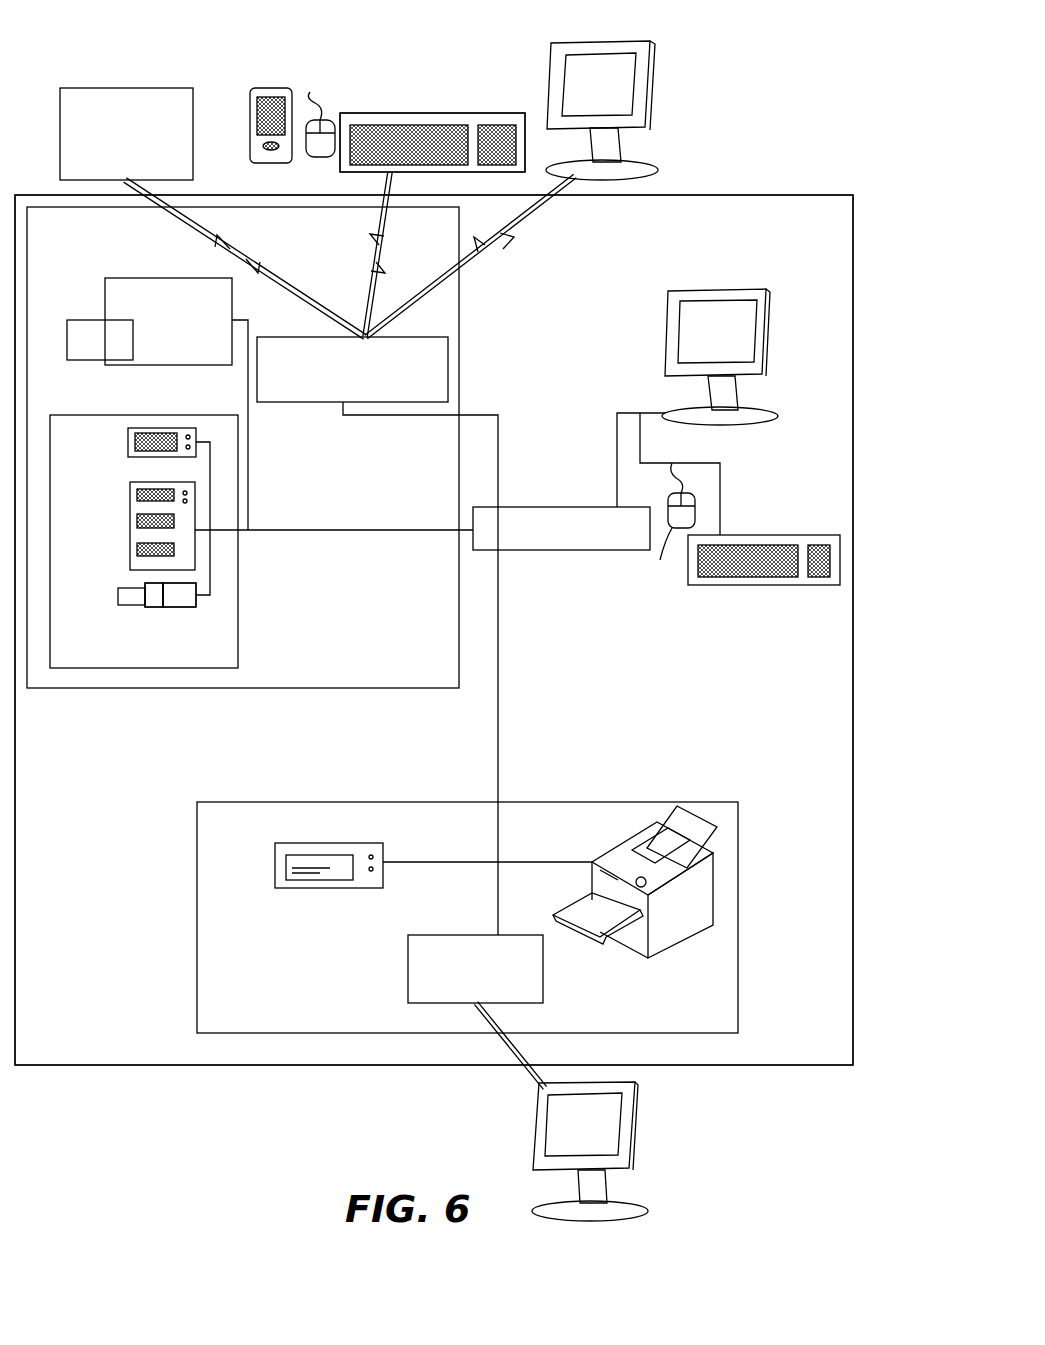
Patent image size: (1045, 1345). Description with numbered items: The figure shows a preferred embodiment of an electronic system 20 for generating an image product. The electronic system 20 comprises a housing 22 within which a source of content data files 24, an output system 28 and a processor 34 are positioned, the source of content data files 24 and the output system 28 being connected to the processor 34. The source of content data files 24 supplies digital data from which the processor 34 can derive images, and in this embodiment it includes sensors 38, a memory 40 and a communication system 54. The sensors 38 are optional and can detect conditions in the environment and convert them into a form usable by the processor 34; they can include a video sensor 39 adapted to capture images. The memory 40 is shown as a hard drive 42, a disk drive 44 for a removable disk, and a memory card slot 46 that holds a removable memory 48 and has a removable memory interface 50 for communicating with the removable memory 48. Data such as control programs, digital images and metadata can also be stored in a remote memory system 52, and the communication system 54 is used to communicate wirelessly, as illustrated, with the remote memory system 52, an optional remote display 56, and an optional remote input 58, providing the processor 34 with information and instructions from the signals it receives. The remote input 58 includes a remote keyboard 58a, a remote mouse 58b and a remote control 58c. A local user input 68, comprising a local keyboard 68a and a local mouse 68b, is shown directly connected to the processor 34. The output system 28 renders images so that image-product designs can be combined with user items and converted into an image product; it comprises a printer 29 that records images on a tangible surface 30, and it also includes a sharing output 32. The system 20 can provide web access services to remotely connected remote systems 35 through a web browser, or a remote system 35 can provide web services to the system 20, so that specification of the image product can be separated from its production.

The electronic system 20 is at (70, 1059).
The housing 22 is at (128, 1067).
The source of content data files 24 is at (100, 690).
The output system 28 is at (197, 914).
The printer 29 is at (590, 870).
The tangible surface 30 is at (275, 861).
The sharing output 32 is at (408, 970).
The processor 34 is at (582, 507).
The remote system 35 is at (537, 1120).
The sensors 38 is at (160, 278).
The video sensor 39 is at (90, 320).
The memory 40 is at (118, 415).
The hard drive 42 is at (130, 519).
The disk drive 44 is at (128, 441).
The memory card slot 46 is at (180, 608).
The removable memory 48 is at (118, 595).
The removable memory interface 50 is at (146, 608).
The remote memory system 52 is at (134, 88).
The communication system 54 is at (304, 402).
The remote display 56 is at (615, 42).
The remote input 58 is at (496, 77).
The remote keyboard 58a is at (458, 113).
The remote mouse 58b is at (321, 112).
The remote control 58c is at (270, 88).
The local user input 68 is at (735, 290).
The local keyboard 68a is at (782, 535).
The local mouse 68b is at (670, 524).